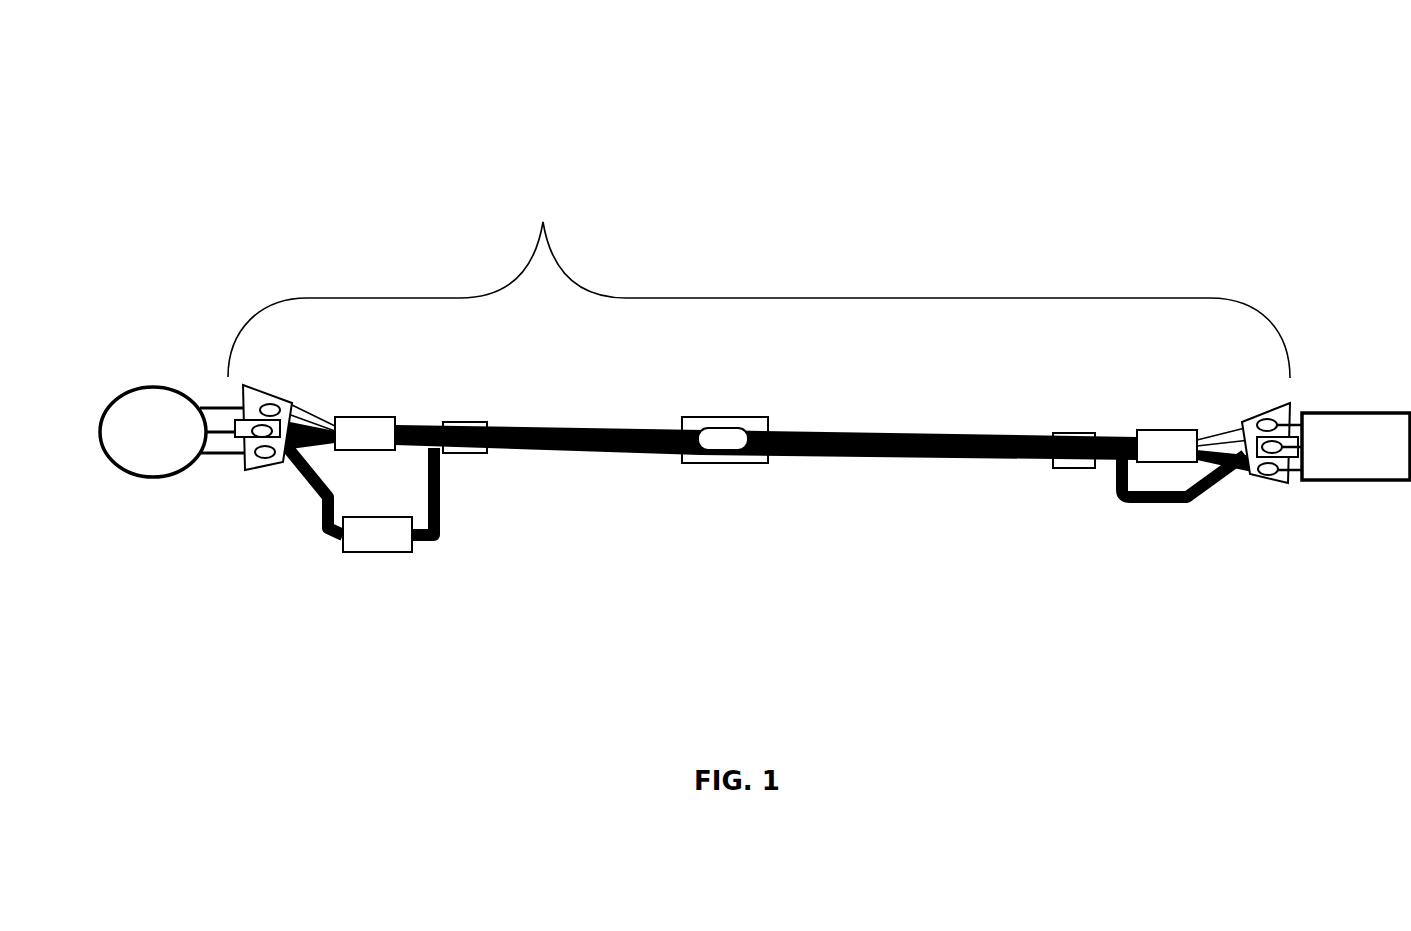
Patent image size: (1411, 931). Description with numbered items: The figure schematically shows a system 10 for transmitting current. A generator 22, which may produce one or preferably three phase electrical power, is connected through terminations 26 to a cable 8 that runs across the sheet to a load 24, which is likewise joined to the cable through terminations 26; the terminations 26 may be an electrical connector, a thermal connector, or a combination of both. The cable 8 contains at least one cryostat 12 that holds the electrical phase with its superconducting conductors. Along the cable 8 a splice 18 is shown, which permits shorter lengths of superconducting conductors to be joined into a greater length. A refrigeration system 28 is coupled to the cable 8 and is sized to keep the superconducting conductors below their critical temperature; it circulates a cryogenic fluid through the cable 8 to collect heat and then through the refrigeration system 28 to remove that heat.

The system 10 is at (323, 155).
The cable 8 is at (759, 283).
The cryostat 12 is at (442, 520).
The splice 18 is at (657, 455).
The generator 22 is at (143, 463).
The load 24 is at (1357, 413).
The terminations 26 is at (262, 463).
The refrigeration system 28 is at (395, 540).